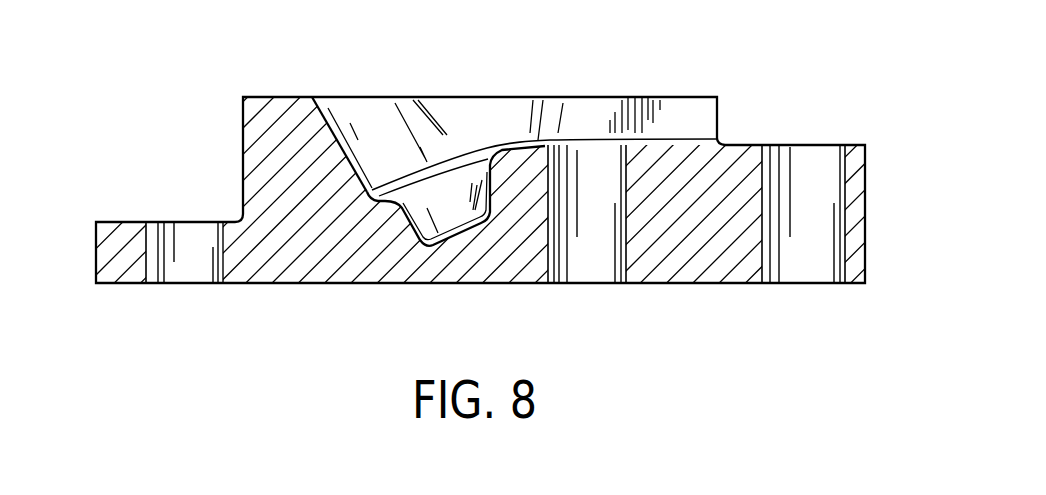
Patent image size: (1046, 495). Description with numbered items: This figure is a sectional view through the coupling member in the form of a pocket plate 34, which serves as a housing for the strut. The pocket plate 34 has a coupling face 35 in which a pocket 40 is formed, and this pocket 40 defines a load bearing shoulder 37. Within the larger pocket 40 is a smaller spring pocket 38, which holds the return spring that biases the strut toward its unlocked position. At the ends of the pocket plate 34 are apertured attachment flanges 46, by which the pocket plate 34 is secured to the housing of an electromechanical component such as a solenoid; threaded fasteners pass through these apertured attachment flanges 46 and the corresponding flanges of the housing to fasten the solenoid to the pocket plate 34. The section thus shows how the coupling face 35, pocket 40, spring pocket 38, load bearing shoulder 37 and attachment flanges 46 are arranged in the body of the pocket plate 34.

The pocket plate 34 is at (736, 146).
The coupling face 35 is at (279, 97).
The load bearing shoulder 37 is at (333, 142).
The spring pocket 38 is at (490, 187).
The pocket 40 is at (590, 120).
The apertured attachment flanges 46 is at (121, 222).